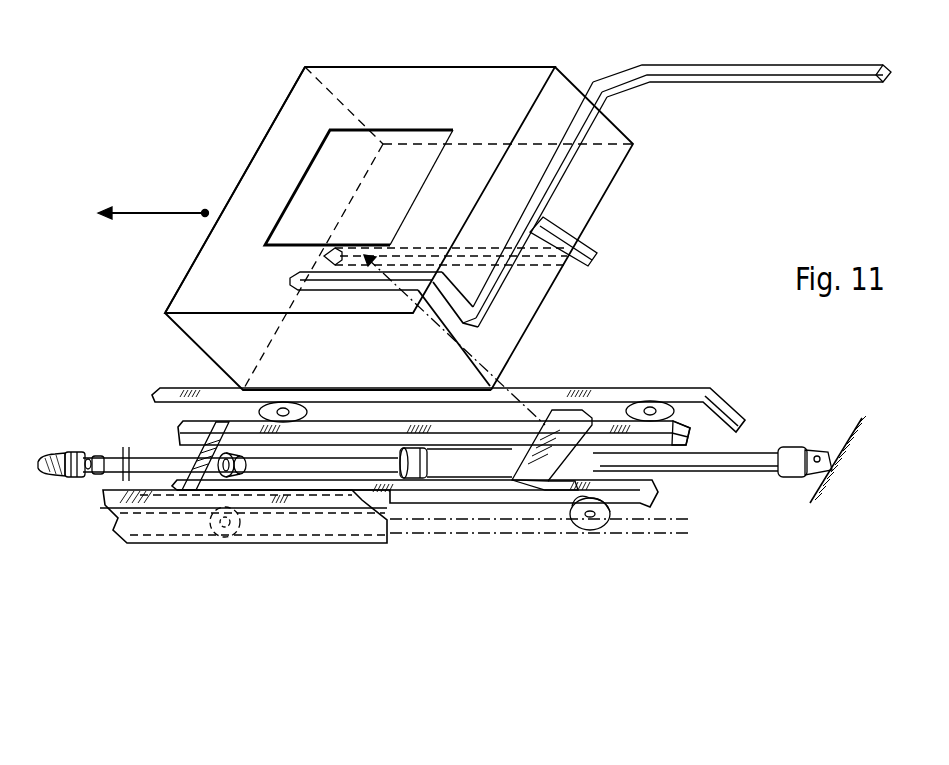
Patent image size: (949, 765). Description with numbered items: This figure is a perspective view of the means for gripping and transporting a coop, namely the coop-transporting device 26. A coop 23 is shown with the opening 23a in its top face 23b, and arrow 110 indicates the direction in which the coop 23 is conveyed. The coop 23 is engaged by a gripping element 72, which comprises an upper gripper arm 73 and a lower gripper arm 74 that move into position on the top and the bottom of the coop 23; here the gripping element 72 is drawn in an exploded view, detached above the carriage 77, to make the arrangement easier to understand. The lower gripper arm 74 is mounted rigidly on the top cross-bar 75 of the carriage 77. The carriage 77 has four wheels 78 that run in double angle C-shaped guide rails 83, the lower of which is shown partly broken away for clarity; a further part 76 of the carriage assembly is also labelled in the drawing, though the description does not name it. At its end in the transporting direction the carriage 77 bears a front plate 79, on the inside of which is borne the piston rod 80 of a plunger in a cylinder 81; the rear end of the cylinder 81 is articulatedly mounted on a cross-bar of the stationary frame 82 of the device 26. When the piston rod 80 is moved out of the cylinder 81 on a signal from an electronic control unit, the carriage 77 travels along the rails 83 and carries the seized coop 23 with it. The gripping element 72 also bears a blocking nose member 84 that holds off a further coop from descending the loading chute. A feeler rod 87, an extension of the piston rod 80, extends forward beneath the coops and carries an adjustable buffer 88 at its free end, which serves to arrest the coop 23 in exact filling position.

The coop 23 is at (371, 228).
The opening 23a is at (356, 148).
The top face 23b is at (258, 162).
The coop-transporting device 26 is at (576, 60).
The gripping element 72 is at (572, 214).
The upper gripper arm 73 is at (293, 278).
The lower gripper arm 74 is at (428, 250).
The top cross-bar 75 is at (560, 420).
The sleeve 76 is at (692, 447).
The carriage 77 is at (440, 512).
The wheels 78 is at (312, 400).
The front plate 79 is at (188, 455).
The piston rod 80 is at (318, 465).
The cylinder 81 is at (748, 462).
The stationary frame 82 is at (822, 497).
The guide rails 83 is at (735, 405).
The blocking nose member 84 is at (759, 70).
The feeler rod 87 is at (110, 458).
The adjustable buffer 88 is at (57, 478).
The arrow 110 is at (153, 200).